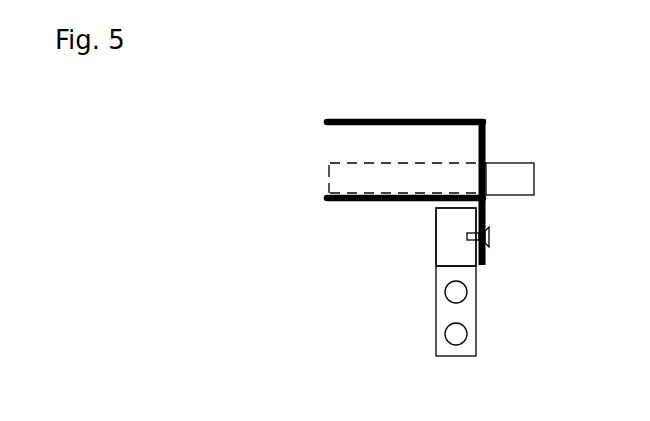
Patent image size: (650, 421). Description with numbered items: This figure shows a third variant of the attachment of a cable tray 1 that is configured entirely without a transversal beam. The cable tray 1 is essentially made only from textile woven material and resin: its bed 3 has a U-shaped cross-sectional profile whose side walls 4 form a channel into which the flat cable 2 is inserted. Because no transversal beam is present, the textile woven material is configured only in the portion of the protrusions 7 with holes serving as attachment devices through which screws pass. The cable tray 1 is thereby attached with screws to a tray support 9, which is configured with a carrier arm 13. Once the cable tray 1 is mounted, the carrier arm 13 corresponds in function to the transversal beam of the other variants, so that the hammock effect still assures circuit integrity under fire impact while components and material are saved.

The cable tray 1 is at (432, 160).
The flat cable 2 is at (512, 175).
The bed 3 is at (345, 203).
The side wall 4 is at (365, 119).
The protrusion 7 is at (487, 257).
The tray support 9 is at (435, 282).
The carrier arm 13 is at (443, 250).